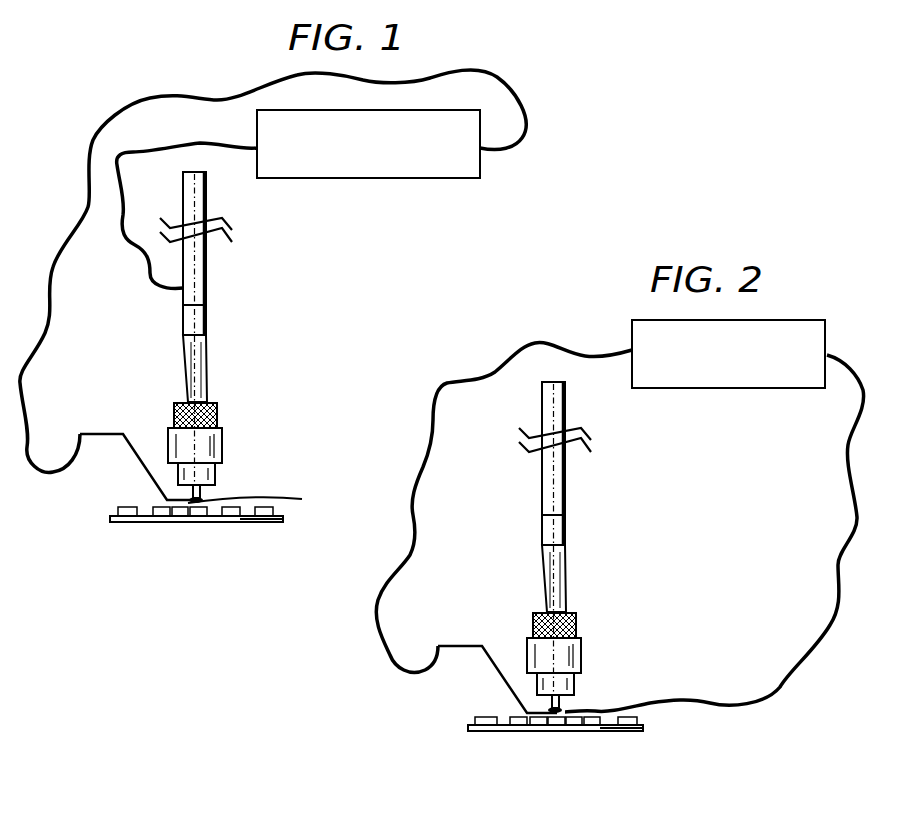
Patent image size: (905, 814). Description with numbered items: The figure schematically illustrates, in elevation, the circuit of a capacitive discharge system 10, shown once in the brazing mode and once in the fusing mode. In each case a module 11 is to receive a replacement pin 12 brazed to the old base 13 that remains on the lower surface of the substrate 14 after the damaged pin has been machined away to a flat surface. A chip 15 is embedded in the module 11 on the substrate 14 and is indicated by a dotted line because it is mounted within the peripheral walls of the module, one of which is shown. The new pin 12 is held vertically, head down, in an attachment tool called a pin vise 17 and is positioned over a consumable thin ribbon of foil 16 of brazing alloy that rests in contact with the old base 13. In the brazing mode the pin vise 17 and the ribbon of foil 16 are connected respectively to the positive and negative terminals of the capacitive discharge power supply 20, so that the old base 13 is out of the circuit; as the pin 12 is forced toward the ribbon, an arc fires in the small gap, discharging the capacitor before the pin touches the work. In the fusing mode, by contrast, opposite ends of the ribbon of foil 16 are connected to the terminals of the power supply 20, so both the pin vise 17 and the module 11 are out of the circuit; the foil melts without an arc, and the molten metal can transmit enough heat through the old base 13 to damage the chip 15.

In FIG. 1, the system 10 is at (252, 318).
In FIG. 2, the system 10 is at (612, 530).
In FIG. 1, the module 11 is at (117, 523).
In FIG. 2, the module 11 is at (477, 733).
In FIG. 1, the replacement pin 12 is at (200, 493).
In FIG. 2, the replacement pin 12 is at (560, 711).
In FIG. 1, the old base 13 is at (258, 499).
In FIG. 1, the substrate 14 is at (283, 519).
In FIG. 2, the substrate 14 is at (643, 730).
In FIG. 1, the chip 15 is at (216, 517).
In FIG. 2, the chip 15 is at (577, 732).
In FIG. 1, the ribbon of foil 16 is at (107, 440).
In FIG. 2, the ribbon of foil 16 is at (467, 650).
In FIG. 1, the pin vise 17 is at (208, 253).
In FIG. 2, the pin vise 17 is at (568, 462).
In FIG. 1, the capacitive discharge power supply 20 is at (355, 188).
In FIG. 2, the capacitive discharge power supply 20 is at (715, 397).